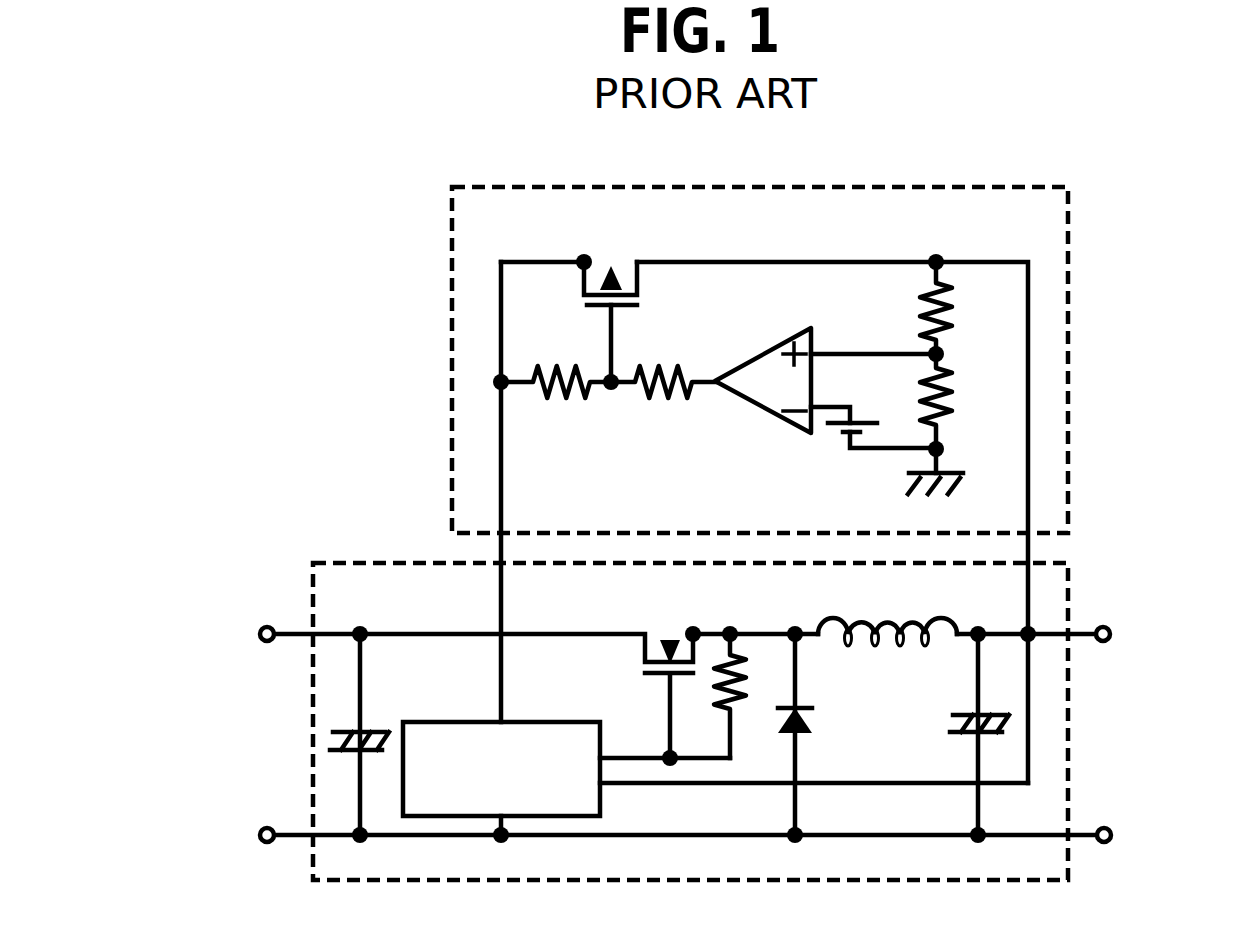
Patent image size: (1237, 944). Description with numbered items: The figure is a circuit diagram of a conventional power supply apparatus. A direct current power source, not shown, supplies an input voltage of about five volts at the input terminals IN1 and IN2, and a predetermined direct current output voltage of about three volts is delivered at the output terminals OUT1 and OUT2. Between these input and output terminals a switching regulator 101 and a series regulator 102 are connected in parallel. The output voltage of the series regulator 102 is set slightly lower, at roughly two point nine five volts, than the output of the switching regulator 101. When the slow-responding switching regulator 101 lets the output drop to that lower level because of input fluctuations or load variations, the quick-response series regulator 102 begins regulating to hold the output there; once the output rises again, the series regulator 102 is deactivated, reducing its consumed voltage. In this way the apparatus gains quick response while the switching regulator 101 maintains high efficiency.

The switching regulator 101 is at (1072, 593).
The series regulator 102 is at (1018, 187).
The input terminal IN1 is at (234, 637).
The input terminal IN2 is at (234, 837).
The output terminal OUT1 is at (1153, 633).
The output terminal OUT2 is at (1154, 834).